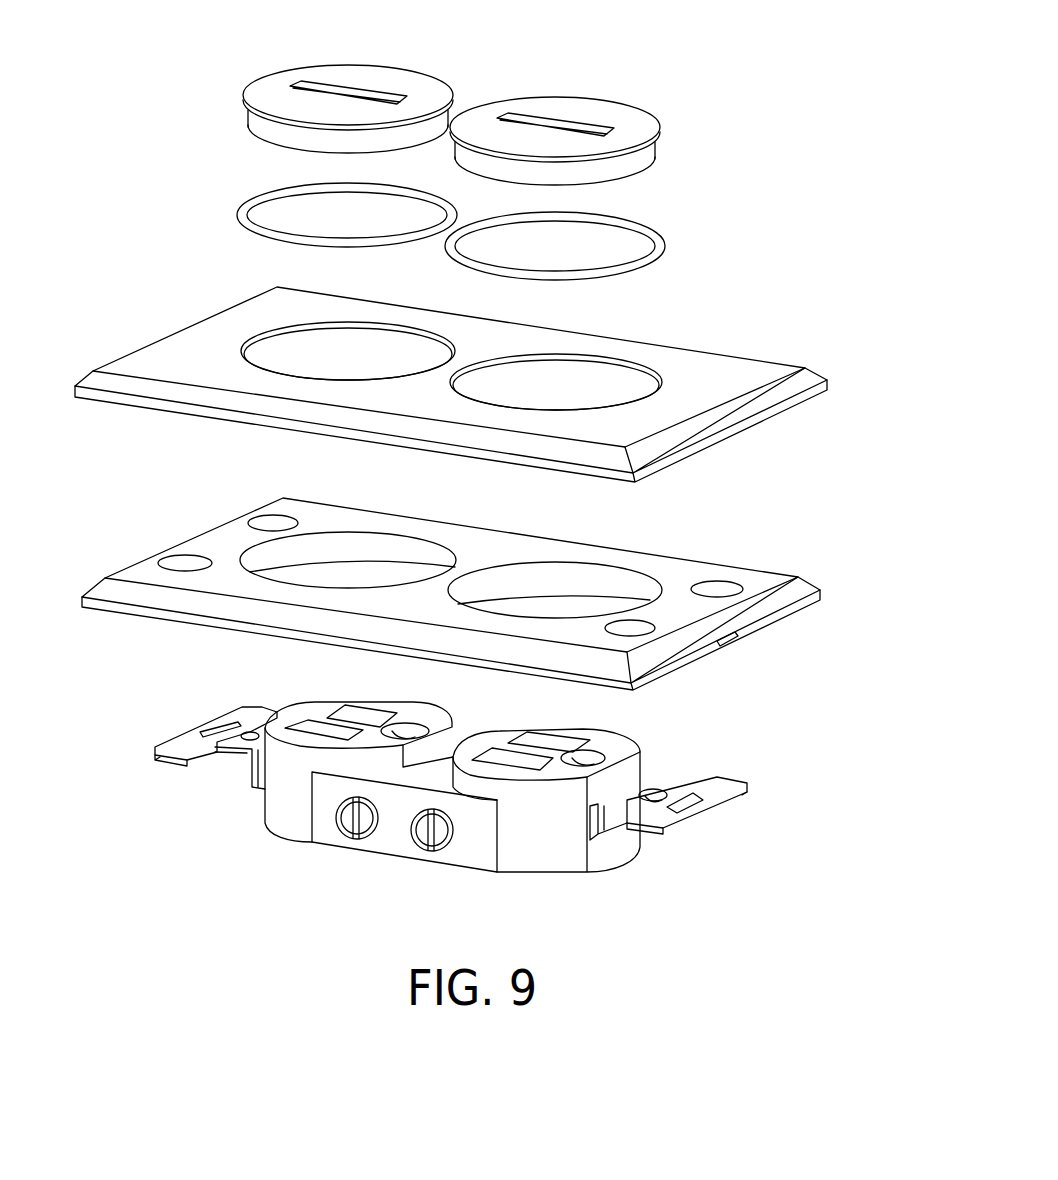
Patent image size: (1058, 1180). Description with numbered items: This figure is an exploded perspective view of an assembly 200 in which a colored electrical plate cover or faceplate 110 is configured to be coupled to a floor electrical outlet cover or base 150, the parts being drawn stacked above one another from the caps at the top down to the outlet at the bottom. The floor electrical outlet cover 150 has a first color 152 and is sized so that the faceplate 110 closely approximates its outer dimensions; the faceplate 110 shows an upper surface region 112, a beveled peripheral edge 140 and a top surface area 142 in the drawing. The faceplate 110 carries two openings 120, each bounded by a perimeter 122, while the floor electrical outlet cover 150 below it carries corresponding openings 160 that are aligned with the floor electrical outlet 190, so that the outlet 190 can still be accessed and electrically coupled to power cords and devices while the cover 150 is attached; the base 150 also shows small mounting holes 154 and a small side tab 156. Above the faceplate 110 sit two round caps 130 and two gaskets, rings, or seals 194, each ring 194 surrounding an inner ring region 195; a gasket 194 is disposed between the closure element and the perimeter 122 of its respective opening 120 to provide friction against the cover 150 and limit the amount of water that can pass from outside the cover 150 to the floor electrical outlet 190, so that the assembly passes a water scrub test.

The assembly 200 is at (100, 168).
The colored electrical plate cover or faceplate 110 is at (820, 250).
The top surface of cover plate 112 is at (208, 373).
The opening 120 is at (570, 399).
The perimeter of opening 122 is at (660, 378).
The cap 130 is at (405, 78).
The peripheral edge of cover plate 140 is at (732, 438).
The top surface region of cover plate 142 is at (745, 372).
The floor electrical outlet cover or base 150 is at (822, 578).
The first color 152 is at (505, 563).
The mounting hole 154 is at (273, 522).
The tab 156 is at (730, 642).
The opening 160 is at (365, 588).
The floor electrical outlet 190 is at (701, 753).
The gasket, ring, or seal 194 is at (660, 242).
The ring opening 195 is at (570, 258).